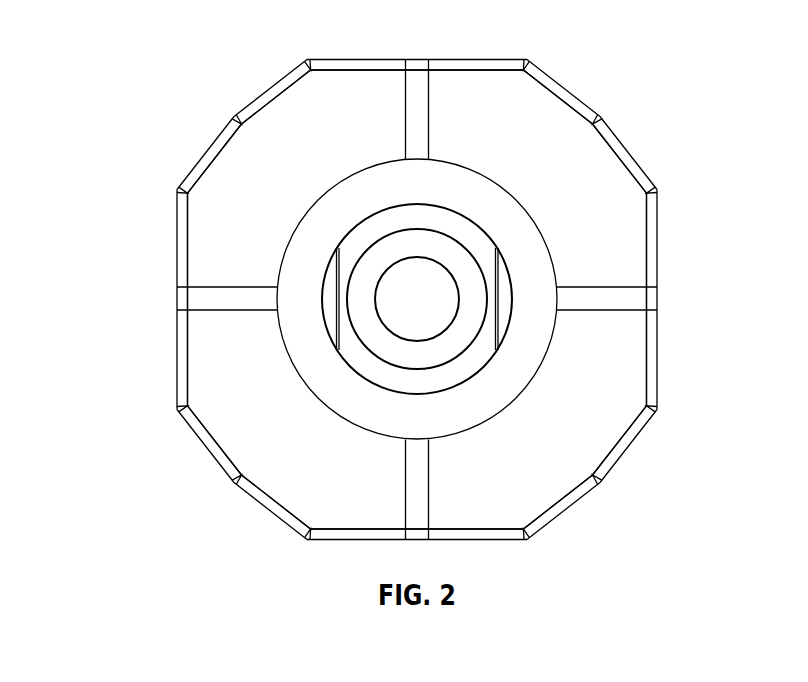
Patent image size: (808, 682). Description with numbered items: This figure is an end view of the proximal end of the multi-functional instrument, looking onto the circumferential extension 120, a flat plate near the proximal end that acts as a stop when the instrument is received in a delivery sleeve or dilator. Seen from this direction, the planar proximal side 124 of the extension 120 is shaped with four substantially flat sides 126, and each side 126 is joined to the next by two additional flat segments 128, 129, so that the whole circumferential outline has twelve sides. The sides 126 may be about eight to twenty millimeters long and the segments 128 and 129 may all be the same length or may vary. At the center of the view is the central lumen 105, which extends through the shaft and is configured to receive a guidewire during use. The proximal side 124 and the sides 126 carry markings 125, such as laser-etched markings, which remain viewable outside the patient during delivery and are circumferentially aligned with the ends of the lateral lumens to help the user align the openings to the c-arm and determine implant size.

The circumferential extension 120 is at (134, 62).
The planar proximal side 124 is at (355, 93).
The markings 125 is at (412, 78).
The flat sides 126 is at (457, 59).
The flat segment 128 is at (207, 146).
The flat segment 129 is at (263, 88).
The central lumen 105 is at (408, 293).